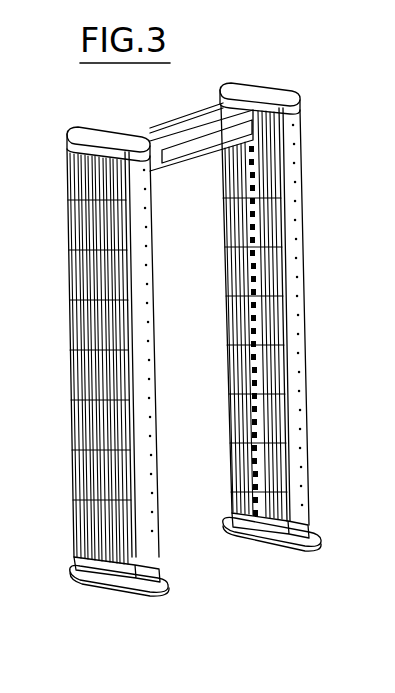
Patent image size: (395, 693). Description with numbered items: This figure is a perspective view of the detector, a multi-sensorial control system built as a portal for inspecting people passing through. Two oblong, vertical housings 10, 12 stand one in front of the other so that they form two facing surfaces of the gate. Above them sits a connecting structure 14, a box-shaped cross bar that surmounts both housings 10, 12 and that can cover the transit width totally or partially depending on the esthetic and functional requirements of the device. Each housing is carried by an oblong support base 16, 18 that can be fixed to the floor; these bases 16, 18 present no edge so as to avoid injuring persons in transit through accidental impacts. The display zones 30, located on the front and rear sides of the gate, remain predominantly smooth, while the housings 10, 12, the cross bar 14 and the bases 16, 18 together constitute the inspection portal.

The housing 10 is at (88, 360).
The housing 12 is at (242, 313).
The connecting structure 14 is at (173, 146).
The base 16 is at (93, 582).
The base 18 is at (248, 535).
The display zone 30 is at (262, 128).